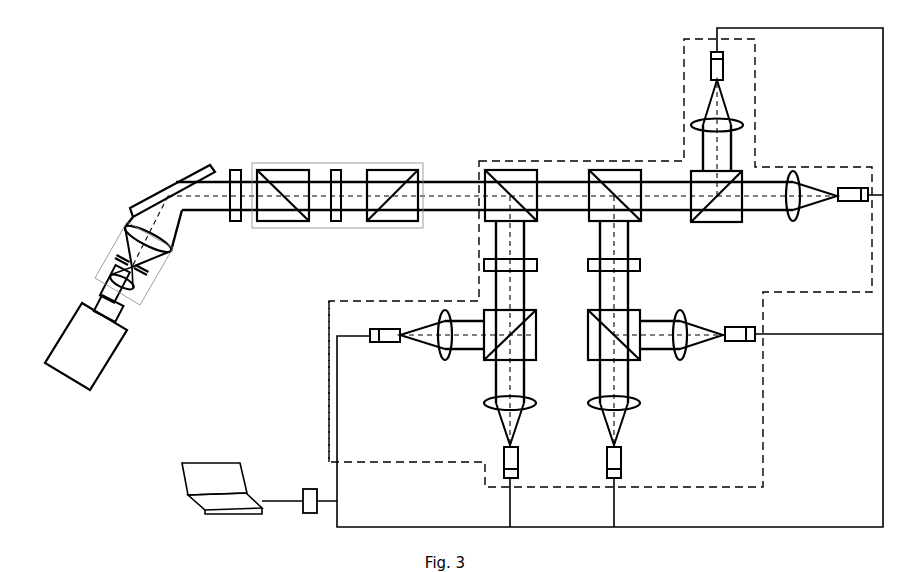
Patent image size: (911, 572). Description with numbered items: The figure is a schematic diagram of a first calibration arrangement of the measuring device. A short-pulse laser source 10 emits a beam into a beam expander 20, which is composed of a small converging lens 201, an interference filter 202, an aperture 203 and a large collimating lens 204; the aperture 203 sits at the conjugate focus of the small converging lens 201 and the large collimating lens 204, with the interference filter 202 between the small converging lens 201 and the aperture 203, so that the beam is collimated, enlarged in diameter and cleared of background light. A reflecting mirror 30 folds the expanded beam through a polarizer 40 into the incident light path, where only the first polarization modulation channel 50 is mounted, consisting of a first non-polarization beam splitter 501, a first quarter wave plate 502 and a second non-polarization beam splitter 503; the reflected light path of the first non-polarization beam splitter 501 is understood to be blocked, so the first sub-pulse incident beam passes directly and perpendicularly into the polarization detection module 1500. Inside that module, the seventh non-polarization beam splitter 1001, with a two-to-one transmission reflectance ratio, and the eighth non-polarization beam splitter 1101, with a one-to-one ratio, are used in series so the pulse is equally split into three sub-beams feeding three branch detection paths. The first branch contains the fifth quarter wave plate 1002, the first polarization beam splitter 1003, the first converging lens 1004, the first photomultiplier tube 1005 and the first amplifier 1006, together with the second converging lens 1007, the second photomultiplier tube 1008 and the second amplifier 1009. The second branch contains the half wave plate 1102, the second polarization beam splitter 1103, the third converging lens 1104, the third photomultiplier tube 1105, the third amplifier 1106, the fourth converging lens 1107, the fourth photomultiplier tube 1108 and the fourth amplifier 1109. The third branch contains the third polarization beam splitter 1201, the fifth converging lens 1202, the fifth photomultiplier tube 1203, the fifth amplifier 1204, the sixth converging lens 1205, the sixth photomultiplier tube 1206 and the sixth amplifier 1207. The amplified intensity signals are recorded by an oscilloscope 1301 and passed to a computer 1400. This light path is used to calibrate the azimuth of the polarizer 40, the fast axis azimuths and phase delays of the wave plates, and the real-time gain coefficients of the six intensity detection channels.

The short-pulse laser source 10 is at (70, 345).
The beam expander 20 is at (148, 322).
The small converging lens 201 is at (100, 300).
The interference filter 202 is at (112, 280).
The aperture 203 is at (120, 262).
The large collimating lens 204 is at (136, 231).
The reflecting mirror 30 is at (165, 185).
The polarizer 40 is at (233, 175).
The first polarization modulation channel 50 is at (258, 163).
The first non-polarization beam splitter 501 is at (282, 176).
The first ¼ wave plate 502 is at (334, 178).
The second non-polarization beam splitter 503 is at (380, 178).
The seventh non-polarization beam splitter 1001 is at (505, 175).
The fifth ¼ wave plate 1002 is at (490, 264).
The first polarization beam splitter 1003 is at (500, 320).
The first converging lens 1004 is at (440, 345).
The first photomultiplier tube 1005 is at (385, 342).
The first amplifier 1006 is at (374, 329).
The second converging lens 1007 is at (490, 403).
The second photomultiplier tube 1008 is at (507, 458).
The second amplifier 1009 is at (507, 474).
The eighth non-polarization beam splitter 1101 is at (615, 175).
The ½ wave plate 1102 is at (605, 265).
The second polarization beam splitter 1103 is at (605, 332).
The third converging lens 1104 is at (605, 403).
The third photomultiplier tube 1105 is at (609, 455).
The third amplifier 1106 is at (612, 474).
The fourth converging lens 1107 is at (680, 360).
The fourth photomultiplier tube 1108 is at (735, 341).
The fourth amplifier 1109 is at (750, 341).
The third polarization beam splitter 1201 is at (712, 222).
The fifth converging lens 1202 is at (700, 125).
The fifth photomultiplier tube 1203 is at (713, 68).
The fifth amplifier 1204 is at (715, 55).
The sixth converging lens 1205 is at (792, 222).
The sixth photomultiplier tube 1206 is at (853, 201).
The sixth amplifier 1207 is at (863, 188).
The oscilloscope 1301 is at (310, 489).
The computer 1400 is at (232, 475).
The polarization detection module 1500 is at (342, 313).